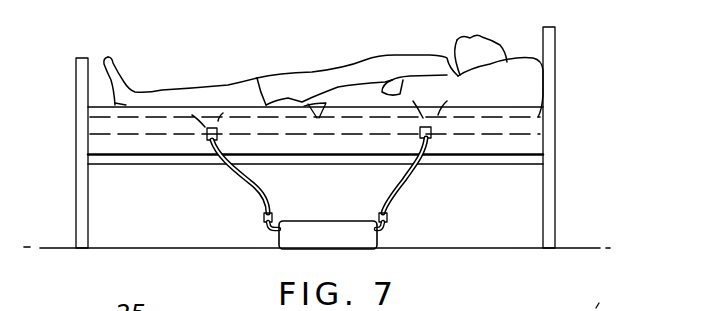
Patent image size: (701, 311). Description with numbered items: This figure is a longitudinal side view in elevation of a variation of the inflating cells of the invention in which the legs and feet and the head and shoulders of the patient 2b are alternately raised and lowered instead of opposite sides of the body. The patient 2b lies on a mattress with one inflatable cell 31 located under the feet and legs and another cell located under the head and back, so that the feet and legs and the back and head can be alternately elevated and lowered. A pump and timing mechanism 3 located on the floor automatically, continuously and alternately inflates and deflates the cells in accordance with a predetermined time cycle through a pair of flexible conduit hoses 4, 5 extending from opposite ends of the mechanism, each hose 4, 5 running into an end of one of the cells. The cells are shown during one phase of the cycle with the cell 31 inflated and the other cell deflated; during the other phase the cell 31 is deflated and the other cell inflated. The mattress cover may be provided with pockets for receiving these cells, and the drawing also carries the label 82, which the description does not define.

The patient 2b is at (393, 40).
The pump and timing mechanism 3 is at (326, 219).
The flexible conduit hose 4 is at (247, 172).
The flexible conduit hose 5 is at (403, 188).
The inflatable cell 31 is at (522, 87).
The mattress pad 82 is at (111, 110).